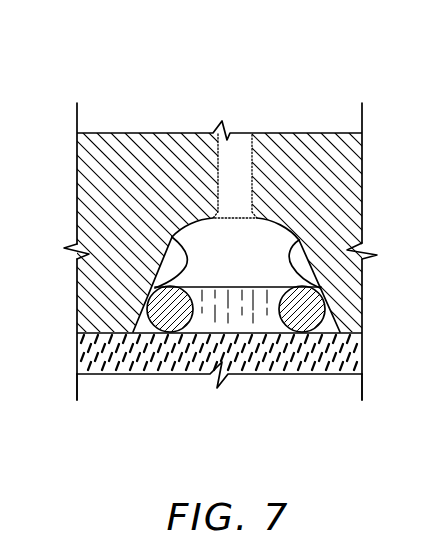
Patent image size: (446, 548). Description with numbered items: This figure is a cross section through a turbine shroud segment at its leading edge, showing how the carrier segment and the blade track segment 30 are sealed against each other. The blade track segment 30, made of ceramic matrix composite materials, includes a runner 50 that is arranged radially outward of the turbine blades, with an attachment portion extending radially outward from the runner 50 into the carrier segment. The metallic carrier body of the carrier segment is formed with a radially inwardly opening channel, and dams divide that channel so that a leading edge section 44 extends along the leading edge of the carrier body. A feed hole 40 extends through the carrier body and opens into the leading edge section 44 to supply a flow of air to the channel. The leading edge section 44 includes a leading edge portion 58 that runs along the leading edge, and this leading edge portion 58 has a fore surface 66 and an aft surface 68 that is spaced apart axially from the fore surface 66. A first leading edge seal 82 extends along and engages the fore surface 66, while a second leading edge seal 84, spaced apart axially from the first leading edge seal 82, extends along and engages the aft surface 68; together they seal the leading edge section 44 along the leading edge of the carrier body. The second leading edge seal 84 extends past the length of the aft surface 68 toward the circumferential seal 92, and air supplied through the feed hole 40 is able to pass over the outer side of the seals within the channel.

The blade track segment 30 is at (107, 394).
The feed holes 40 is at (240, 160).
The leading edge section 44 is at (197, 214).
The runner 50 is at (175, 381).
The leading edge portion 58 is at (250, 240).
The fore surface 66 is at (168, 236).
The aft surface 68 is at (301, 238).
The first leading edge seal 82 is at (138, 298).
The second leading edge seal 84 is at (327, 296).
The circumferential seal 92 is at (264, 279).